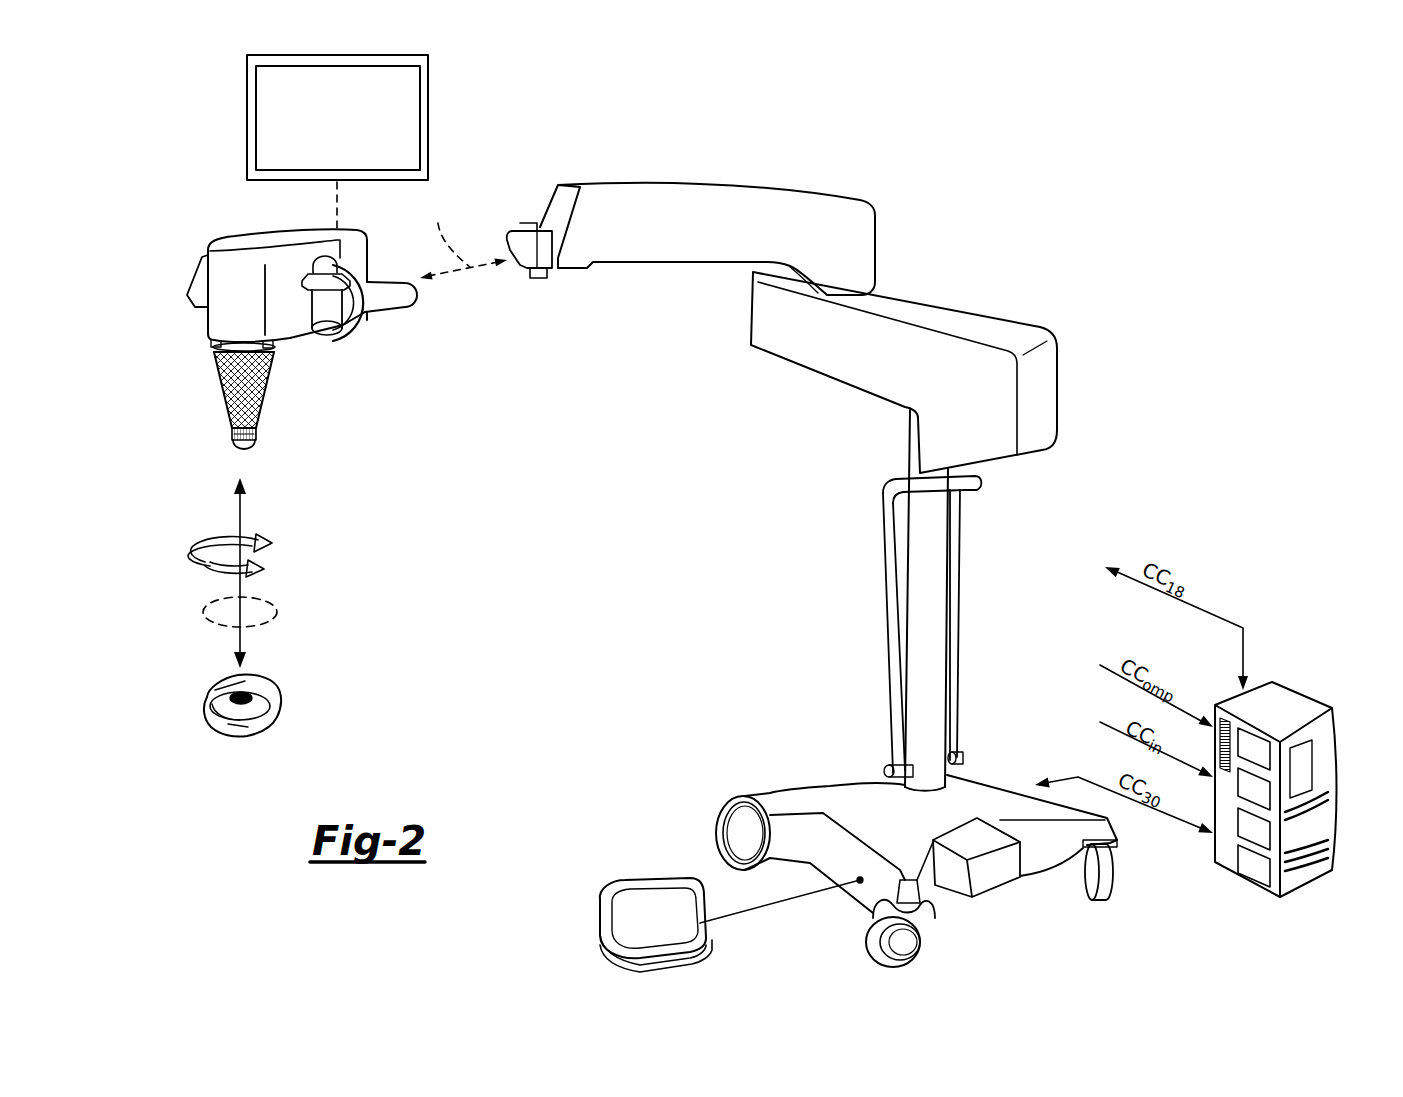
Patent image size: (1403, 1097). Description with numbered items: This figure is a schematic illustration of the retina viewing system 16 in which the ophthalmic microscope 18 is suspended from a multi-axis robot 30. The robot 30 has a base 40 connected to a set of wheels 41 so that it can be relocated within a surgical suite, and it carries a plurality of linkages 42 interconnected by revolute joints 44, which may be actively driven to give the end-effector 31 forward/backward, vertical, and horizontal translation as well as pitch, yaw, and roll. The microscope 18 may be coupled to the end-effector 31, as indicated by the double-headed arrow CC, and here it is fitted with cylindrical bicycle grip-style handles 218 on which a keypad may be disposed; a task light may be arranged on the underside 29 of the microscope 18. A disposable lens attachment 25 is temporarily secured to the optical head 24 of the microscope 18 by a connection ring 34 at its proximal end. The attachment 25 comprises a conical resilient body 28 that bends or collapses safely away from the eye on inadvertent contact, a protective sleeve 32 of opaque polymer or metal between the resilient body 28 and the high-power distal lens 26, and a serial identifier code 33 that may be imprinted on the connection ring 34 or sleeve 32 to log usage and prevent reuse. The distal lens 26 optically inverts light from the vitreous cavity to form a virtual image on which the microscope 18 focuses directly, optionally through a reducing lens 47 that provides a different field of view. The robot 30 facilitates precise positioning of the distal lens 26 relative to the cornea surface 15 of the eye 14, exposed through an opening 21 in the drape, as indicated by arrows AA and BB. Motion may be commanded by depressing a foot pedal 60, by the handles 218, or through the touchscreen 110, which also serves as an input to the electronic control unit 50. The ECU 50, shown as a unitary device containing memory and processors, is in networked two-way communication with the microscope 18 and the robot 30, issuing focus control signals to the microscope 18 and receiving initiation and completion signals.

The touchscreen 110 is at (428, 82).
The ophthalmic microscope 18 is at (224, 312).
The cylindrical bicycle grip-style handles 218 is at (198, 297).
The underside 29 is at (414, 309).
The optical head 24 is at (215, 345).
The connection ring 34 is at (276, 350).
The resilient body 28 is at (212, 375).
The disposable lens attachment 25 is at (300, 400).
The protective sleeve 32 is at (232, 432).
The serial identifier code 33 is at (256, 432).
The distal lens 26 is at (245, 448).
The arrow AA is at (245, 512).
The arrow BB is at (212, 548).
The reducing lens 47 is at (273, 603).
The eye 14 is at (200, 744).
The cornea surface 15 is at (262, 707).
The opening 21 is at (262, 728).
The double-headed arrow CC is at (463, 239).
The retina viewing system 16 is at (945, 172).
The linkages 42 is at (688, 239).
The end-effector 31 is at (550, 296).
The revolute joints 44 is at (507, 210).
The multi-axis robot 30 is at (1110, 423).
The base 40 is at (881, 832).
The wheels 41 is at (735, 832).
The foot pedal 60 is at (656, 922).
The electronic control unit 50 is at (1320, 678).